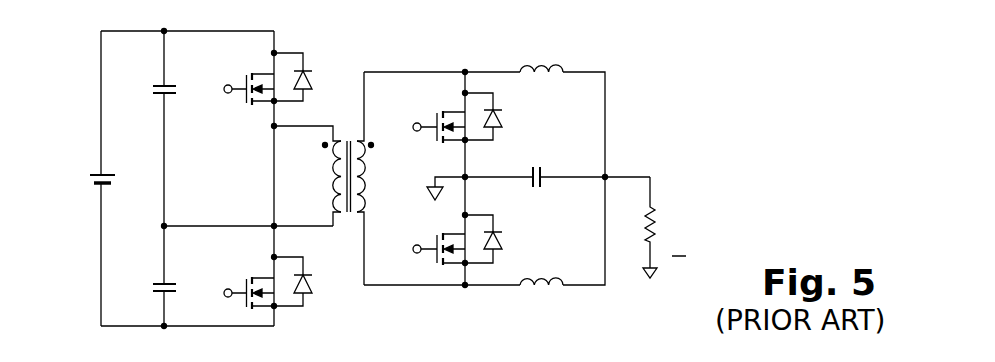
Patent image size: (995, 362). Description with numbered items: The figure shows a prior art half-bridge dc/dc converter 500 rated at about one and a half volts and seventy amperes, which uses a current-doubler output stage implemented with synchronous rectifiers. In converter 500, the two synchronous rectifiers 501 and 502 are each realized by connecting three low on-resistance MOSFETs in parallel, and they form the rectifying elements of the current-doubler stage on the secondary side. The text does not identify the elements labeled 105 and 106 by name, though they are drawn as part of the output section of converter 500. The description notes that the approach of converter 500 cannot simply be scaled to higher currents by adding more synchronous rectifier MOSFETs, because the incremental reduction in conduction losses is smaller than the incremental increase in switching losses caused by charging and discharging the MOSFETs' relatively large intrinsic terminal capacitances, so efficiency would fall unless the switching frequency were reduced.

The dc/dc converter 500 is at (371, 186).
The synchronous rectifier 501 is at (433, 141).
The synchronous rectifier 502 is at (433, 258).
The filter capacitor CF 105 is at (542, 167).
The output ground / load return 106 is at (656, 247).